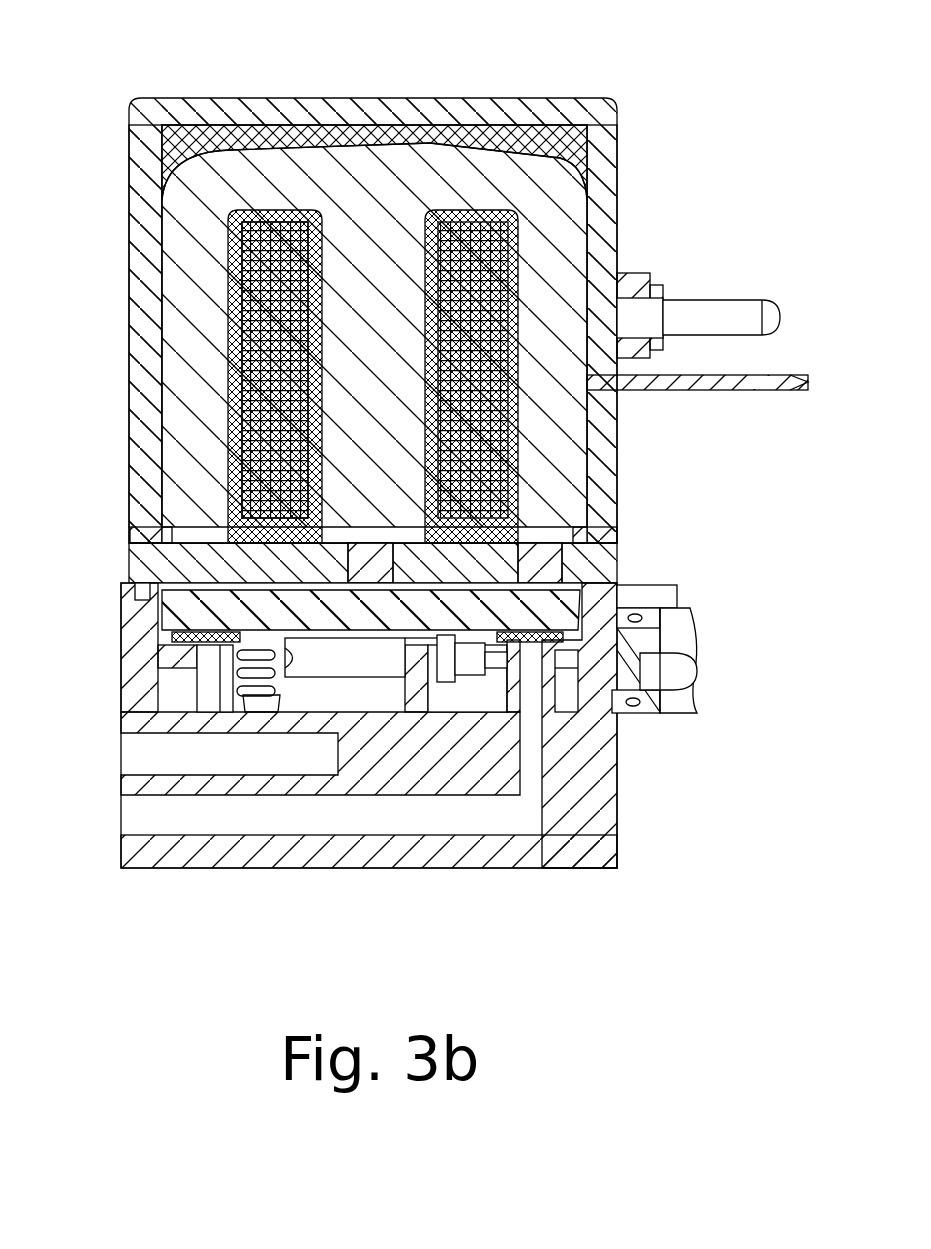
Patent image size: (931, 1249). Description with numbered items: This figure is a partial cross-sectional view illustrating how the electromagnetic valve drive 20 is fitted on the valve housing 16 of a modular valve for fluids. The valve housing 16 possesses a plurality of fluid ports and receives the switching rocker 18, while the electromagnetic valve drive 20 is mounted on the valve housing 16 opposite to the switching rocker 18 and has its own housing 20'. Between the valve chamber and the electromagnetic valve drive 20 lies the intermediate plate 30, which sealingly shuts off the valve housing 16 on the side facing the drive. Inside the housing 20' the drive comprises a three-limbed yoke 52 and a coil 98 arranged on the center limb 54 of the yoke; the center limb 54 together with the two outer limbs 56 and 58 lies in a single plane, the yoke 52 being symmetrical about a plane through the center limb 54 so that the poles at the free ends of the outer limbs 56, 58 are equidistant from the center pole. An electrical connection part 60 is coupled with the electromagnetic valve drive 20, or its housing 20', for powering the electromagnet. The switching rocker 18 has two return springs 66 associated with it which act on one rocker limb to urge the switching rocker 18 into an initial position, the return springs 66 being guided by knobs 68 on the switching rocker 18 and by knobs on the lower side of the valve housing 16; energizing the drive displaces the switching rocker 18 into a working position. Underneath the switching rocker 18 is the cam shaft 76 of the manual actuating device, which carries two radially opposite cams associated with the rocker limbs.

The valve housing 16 is at (605, 803).
The switching rocker 18 is at (130, 618).
The electromagnetic valve drive 20 is at (425, 279).
The housing of the electromagnetic valve drive 20' is at (329, 279).
The intermediate plate 30 is at (135, 565).
The three-limbed yoke 52 is at (428, 148).
The center limb 54 is at (165, 475).
The outer limb 56 is at (350, 372).
The outer limb 58 is at (573, 473).
The electrical connection part 60 is at (607, 220).
The return springs 66 is at (245, 690).
The knobs 68 is at (120, 638).
The cam shaft 76 is at (380, 670).
The coil 98 is at (235, 435).